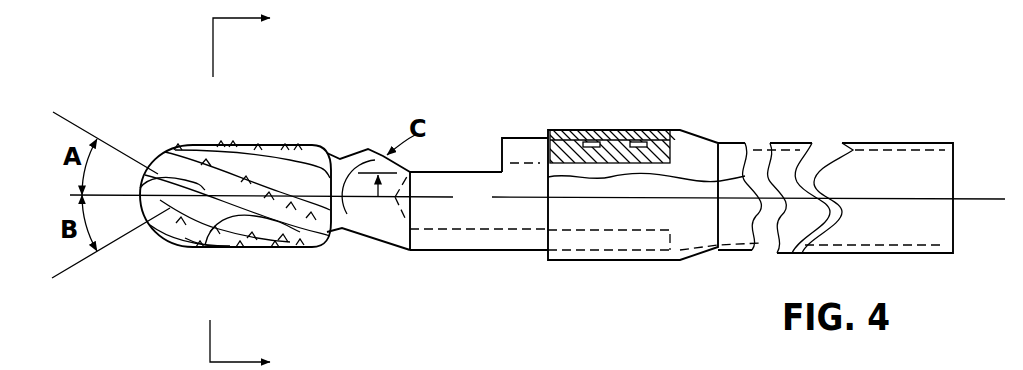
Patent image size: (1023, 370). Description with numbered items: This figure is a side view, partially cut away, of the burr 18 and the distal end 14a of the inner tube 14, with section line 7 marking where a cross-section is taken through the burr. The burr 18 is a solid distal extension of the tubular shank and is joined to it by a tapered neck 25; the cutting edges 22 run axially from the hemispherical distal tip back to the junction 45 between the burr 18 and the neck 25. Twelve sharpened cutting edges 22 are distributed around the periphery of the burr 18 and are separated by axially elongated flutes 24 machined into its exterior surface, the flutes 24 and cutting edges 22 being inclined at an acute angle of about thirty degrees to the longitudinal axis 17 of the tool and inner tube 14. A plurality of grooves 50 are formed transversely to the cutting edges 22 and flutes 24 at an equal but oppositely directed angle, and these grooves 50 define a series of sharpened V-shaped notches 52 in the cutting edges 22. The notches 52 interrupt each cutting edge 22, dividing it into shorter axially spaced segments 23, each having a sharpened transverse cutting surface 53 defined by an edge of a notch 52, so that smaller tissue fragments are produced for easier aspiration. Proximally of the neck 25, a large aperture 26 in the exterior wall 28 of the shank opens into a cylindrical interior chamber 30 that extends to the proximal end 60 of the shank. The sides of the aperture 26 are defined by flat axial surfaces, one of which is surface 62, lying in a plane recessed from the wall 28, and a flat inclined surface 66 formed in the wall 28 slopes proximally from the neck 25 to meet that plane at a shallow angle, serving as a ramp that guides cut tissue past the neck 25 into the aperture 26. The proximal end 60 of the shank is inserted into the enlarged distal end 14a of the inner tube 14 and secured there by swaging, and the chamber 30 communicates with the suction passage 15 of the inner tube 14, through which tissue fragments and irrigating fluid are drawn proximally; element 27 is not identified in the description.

The section line 7 is at (253, 186).
The inner tube 14 is at (865, 142).
The distal end of inner tube 14a is at (615, 130).
The suction passage 15 is at (905, 168).
The longitudinal axis 17 is at (977, 198).
The burr 18 is at (188, 80).
The cutting edges 22 is at (257, 185).
The segments 23 is at (233, 147).
The flutes 24 is at (340, 265).
The neck 25 is at (393, 237).
The aperture 26 is at (460, 147).
The shaft step 27 is at (502, 146).
The exterior wall 28 is at (455, 245).
The interior chamber 30 is at (518, 218).
The junction 45 is at (340, 157).
The grooves 50 is at (160, 249).
The notches 52 is at (205, 258).
The transverse cutting surface 53 is at (204, 242).
The proximal end of shank 60 is at (658, 137).
The flat axial surface 62 is at (480, 172).
The inclined surface 66 is at (376, 202).